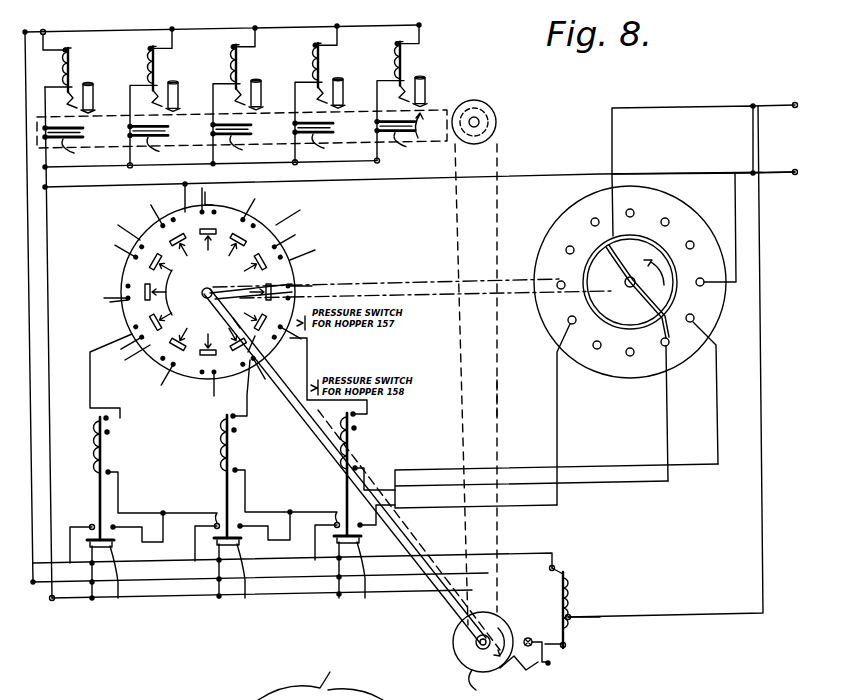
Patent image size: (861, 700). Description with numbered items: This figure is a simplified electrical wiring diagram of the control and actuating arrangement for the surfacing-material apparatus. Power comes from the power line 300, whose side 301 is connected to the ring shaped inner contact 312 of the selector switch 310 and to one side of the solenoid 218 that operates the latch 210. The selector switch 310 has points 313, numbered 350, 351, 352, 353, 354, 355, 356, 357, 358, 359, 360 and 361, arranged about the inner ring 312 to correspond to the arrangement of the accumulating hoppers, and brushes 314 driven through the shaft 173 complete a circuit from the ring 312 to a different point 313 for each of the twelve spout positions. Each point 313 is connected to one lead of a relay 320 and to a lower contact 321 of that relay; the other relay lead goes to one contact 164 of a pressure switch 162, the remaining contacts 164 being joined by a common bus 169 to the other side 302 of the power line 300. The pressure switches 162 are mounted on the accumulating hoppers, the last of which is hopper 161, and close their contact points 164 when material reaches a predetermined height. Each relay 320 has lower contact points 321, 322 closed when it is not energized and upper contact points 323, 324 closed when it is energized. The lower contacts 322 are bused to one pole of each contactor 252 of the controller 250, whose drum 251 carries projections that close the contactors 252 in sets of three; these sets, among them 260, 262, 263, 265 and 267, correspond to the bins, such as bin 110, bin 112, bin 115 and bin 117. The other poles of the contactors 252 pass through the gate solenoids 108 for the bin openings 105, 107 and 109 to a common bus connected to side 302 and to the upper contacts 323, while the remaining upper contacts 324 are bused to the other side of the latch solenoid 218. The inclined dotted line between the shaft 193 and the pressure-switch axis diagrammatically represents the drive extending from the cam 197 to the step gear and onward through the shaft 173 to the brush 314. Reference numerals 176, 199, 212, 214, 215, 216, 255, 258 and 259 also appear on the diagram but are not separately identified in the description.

The bin opening 105 is at (421, 90).
The bin opening 107 is at (261, 93).
The solenoid 108 is at (72, 56).
The bin opening 109 is at (97, 92).
The bin 110 is at (356, 57).
The bin 112 is at (107, 62).
The bin 115 is at (232, 59).
The bin 117 is at (441, 55).
The accumulating hopper 161 is at (153, 232).
The pressure switch 162 is at (217, 285).
The contact points 164 is at (306, 303).
The common bus 169 is at (320, 248).
The shaft 173 is at (627, 275).
The hopper 176 is at (320, 679).
The shaft 193 is at (421, 555).
The cam 197 is at (487, 682).
The pulley wheel 199 is at (464, 660).
The latch 210 is at (548, 650).
The pivot 212 is at (552, 664).
The pivot 214 is at (531, 637).
The lever 215 is at (527, 664).
The plunger pivot 216 is at (568, 644).
The solenoid 218 is at (570, 590).
The controller 250 is at (501, 122).
The drum 251 is at (440, 151).
The contactors 252 is at (243, 148).
The motor shaft 255 is at (489, 120).
The motor pulley 258 is at (479, 118).
The belt 259 is at (500, 396).
The set of contactors 260 is at (328, 127).
The set of contactors 262 is at (79, 132).
The set of contactors 263 is at (166, 130).
The set of contactors 265 is at (248, 129).
The set of contactors 267 is at (419, 116).
The power line 300 is at (793, 168).
The side of power line 301 is at (669, 108).
The other side of power line 302 is at (691, 174).
The selector switch 310 is at (736, 278).
The ring shaped inner contact 312 is at (676, 282).
The points 313 is at (707, 319).
The brushes 314 is at (600, 244).
The relay 320 is at (108, 434).
The lower contact point 321 is at (246, 579).
The lower contact point 322 is at (90, 550).
The upper contact point 323 is at (90, 522).
The upper contact point 324 is at (116, 525).
The point 350 is at (556, 290).
The point 351 is at (565, 246).
The point 352 is at (593, 220).
The point 353 is at (634, 210).
The point 354 is at (669, 220).
The point 355 is at (693, 243).
The point 356 is at (706, 282).
The point 357 is at (696, 320).
The point 358 is at (662, 348).
The point 359 is at (628, 357).
The point 360 is at (595, 350).
The point 361 is at (566, 324).